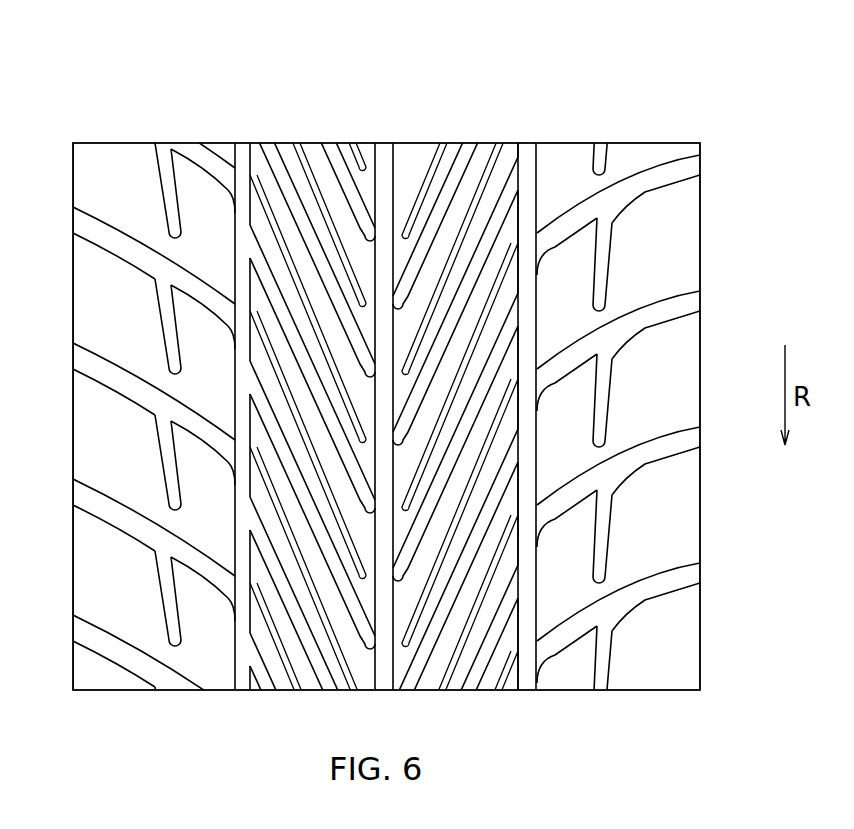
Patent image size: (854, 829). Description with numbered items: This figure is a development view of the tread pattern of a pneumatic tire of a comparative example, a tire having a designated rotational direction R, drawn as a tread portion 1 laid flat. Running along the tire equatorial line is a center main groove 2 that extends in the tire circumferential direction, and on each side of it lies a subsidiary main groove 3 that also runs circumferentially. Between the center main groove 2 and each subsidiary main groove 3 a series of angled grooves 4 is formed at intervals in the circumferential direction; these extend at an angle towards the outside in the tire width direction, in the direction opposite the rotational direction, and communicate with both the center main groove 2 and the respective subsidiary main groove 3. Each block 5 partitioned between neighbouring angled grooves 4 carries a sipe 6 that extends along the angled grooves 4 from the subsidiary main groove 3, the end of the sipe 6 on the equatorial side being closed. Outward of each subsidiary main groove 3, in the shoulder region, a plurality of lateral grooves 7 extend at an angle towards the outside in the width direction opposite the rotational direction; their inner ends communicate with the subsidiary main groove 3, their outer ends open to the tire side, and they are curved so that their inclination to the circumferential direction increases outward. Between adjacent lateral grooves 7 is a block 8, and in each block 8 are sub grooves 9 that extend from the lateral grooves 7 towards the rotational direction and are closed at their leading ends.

The tread portion 1 is at (648, 138).
The center main groove 2 is at (398, 160).
The subsidiary main groove 3 is at (246, 165).
The angled groove 4 is at (290, 195).
The block 5 is at (333, 200).
The sipe 6 is at (258, 175).
The lateral groove 7 is at (110, 228).
The block 8 is at (144, 172).
The sub groove 9 is at (160, 320).